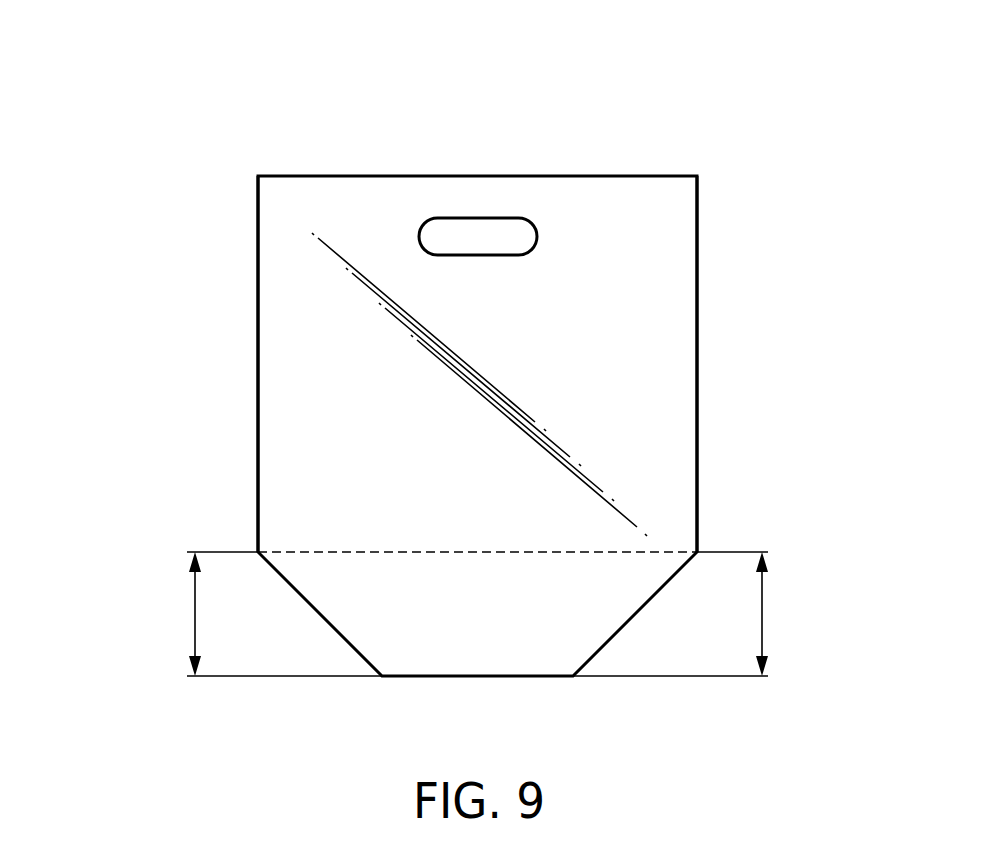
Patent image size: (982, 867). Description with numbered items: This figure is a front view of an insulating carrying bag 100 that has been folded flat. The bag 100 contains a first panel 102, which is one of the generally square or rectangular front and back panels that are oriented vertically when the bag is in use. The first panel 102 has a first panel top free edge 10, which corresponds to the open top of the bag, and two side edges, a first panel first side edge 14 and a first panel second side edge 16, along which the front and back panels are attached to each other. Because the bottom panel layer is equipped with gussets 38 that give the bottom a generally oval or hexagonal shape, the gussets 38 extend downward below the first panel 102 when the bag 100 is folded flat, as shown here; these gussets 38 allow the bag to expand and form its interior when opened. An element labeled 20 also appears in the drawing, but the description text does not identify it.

The insulating carrying bag 100 is at (197, 127).
The first panel top free edge 10 is at (634, 176).
The first panel first side edge 14 is at (258, 365).
The first panel second side edge 16 is at (697, 357).
The handle opening 20 is at (490, 242).
The first panel 102 is at (500, 492).
The gussets 38 is at (477, 614).